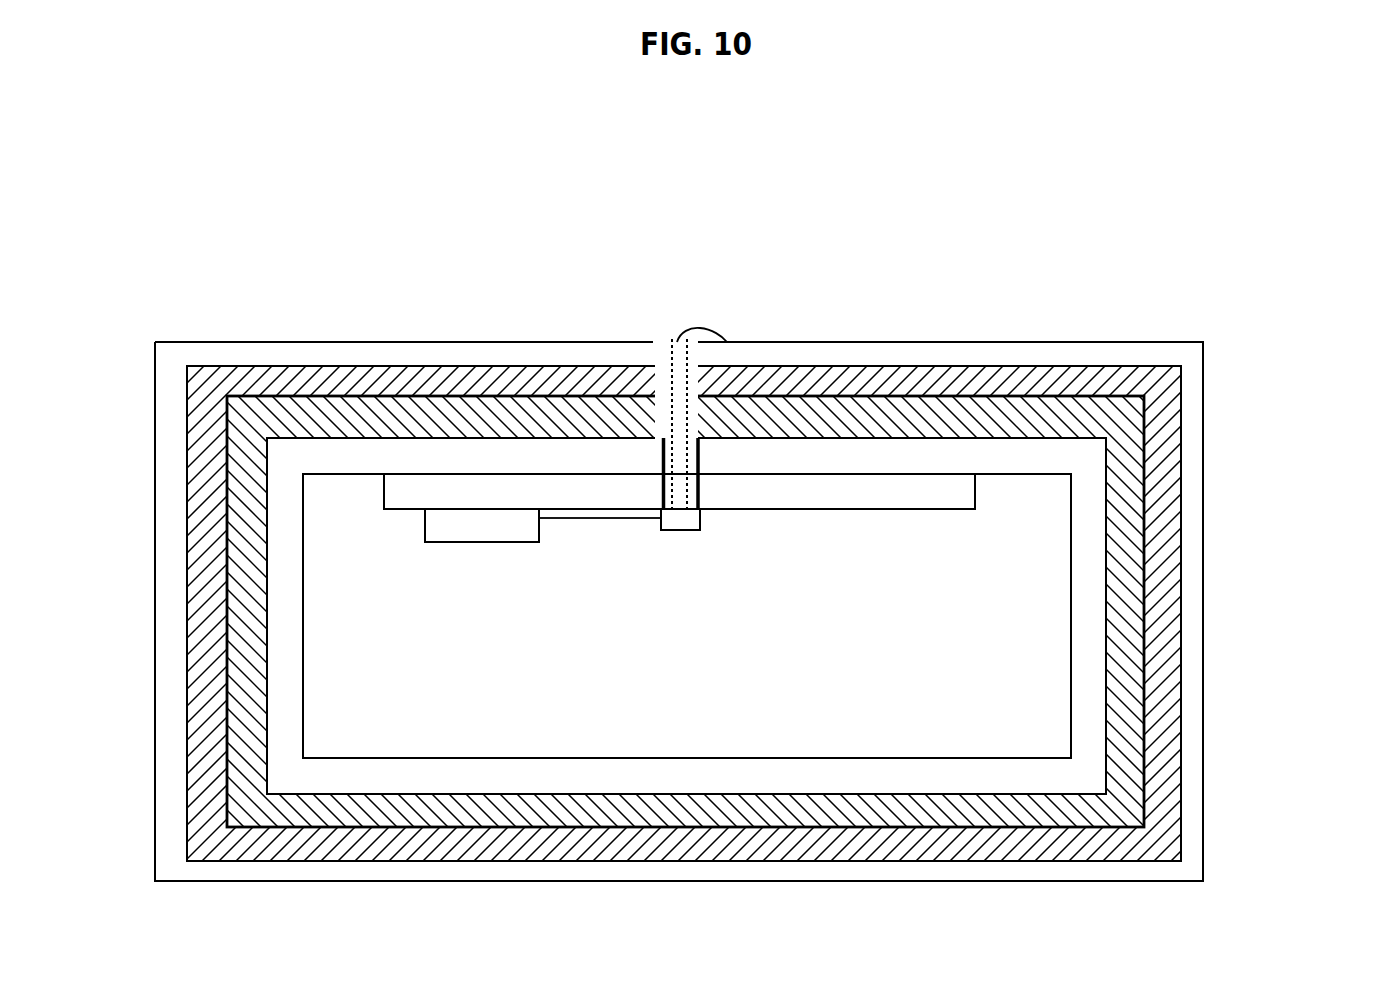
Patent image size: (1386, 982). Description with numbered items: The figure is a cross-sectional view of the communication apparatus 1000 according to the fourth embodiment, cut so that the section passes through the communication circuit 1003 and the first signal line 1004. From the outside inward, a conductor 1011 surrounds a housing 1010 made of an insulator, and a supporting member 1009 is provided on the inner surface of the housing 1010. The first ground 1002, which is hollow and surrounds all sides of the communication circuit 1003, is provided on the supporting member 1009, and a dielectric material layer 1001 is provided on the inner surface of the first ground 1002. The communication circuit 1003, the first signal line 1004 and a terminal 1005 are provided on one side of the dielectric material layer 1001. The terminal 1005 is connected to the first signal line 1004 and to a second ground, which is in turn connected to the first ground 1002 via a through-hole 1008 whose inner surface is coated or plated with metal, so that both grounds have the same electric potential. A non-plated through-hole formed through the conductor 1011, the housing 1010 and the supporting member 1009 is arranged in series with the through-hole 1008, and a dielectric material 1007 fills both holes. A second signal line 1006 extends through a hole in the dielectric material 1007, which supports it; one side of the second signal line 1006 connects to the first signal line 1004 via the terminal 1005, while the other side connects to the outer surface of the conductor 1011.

The communication apparatus 1000 is at (898, 266).
The dielectric material layer 1001 is at (798, 508).
The first ground 1002 is at (303, 577).
The communication circuit 1003 is at (430, 540).
The first signal line 1004 is at (570, 520).
The terminal 1005 is at (677, 537).
The second signal line 1006 is at (703, 327).
The dielectric material 1007 is at (660, 348).
The through-hole 1008 is at (702, 458).
The supporting member 1009 is at (1138, 723).
The housing 1010 is at (1180, 530).
The conductor 1011 is at (1085, 345).